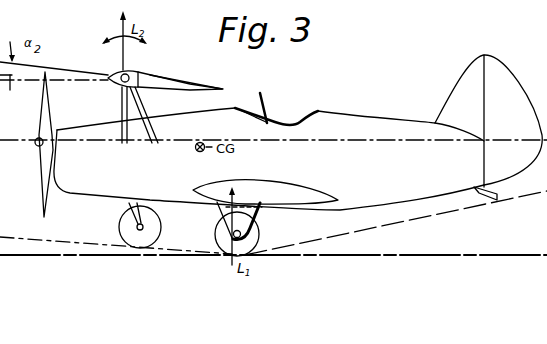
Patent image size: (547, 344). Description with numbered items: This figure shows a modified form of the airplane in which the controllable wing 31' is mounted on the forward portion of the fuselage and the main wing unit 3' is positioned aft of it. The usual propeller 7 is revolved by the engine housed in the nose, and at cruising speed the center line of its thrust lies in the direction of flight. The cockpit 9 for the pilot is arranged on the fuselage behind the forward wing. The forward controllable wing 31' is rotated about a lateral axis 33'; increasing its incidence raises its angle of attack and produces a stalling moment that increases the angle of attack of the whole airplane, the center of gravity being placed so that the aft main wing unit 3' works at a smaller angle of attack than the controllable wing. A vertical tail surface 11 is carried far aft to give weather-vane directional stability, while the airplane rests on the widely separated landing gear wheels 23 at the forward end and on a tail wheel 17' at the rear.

The propeller 7 is at (42, 98).
The cockpit 9 is at (303, 111).
The tail fin and rudder 11 is at (510, 93).
The tail wheel 17' is at (118, 225).
The wheels 23 is at (259, 234).
The main wing unit 3' is at (265, 179).
The controllable wing 31' is at (181, 74).
The lateral axis 33' is at (111, 98).